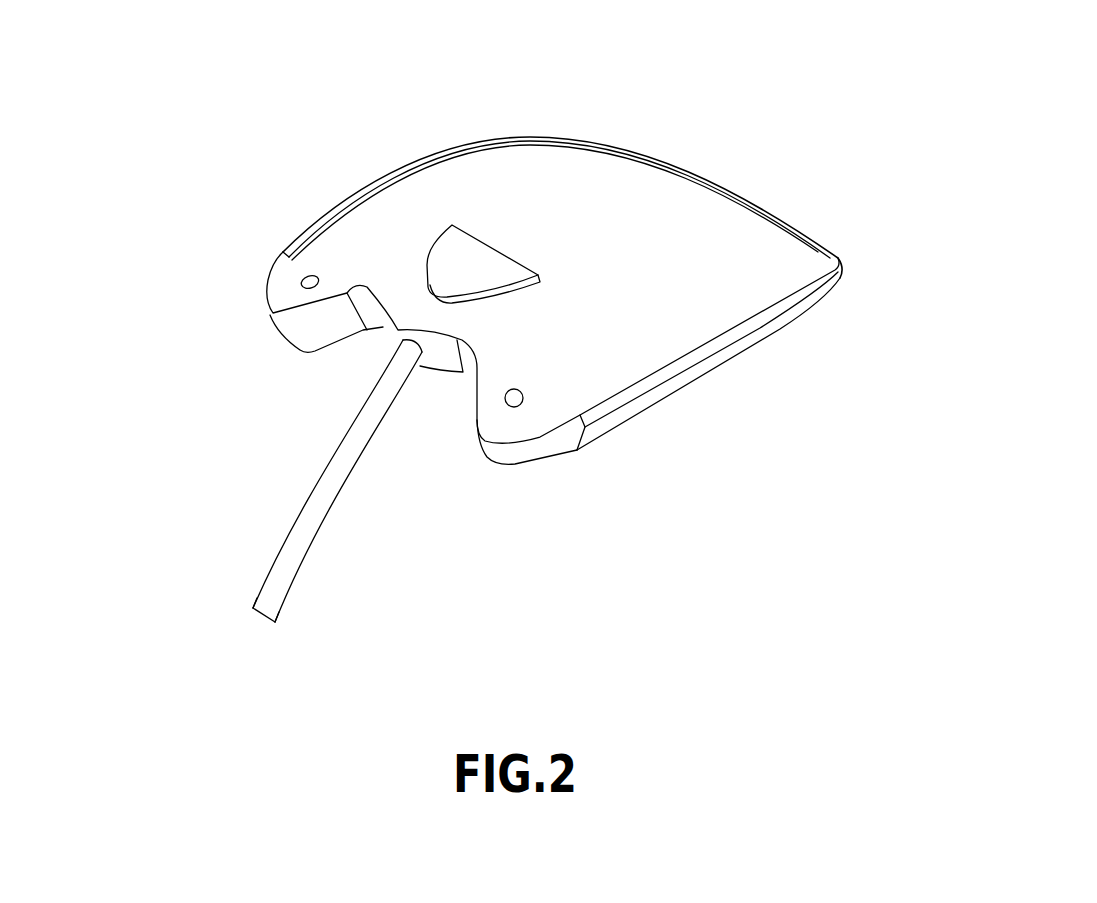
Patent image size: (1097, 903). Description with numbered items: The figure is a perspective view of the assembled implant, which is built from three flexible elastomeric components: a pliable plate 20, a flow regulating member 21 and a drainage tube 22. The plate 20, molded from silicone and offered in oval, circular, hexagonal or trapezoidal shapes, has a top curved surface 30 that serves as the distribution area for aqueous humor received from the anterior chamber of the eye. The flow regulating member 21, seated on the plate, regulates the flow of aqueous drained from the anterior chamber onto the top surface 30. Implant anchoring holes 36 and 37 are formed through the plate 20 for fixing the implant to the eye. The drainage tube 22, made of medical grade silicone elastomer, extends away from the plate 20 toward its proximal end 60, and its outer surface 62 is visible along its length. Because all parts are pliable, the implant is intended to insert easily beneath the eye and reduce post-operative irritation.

The pliable plate 20 is at (713, 367).
The flow regulating member 21 is at (482, 238).
The drainage tube 22 is at (251, 512).
The top curved surface 30 is at (717, 223).
The implant anchoring hole 36 is at (523, 427).
The implant anchoring hole 37 is at (300, 305).
The proximal end 60 is at (275, 622).
The outer surface 62 is at (323, 515).